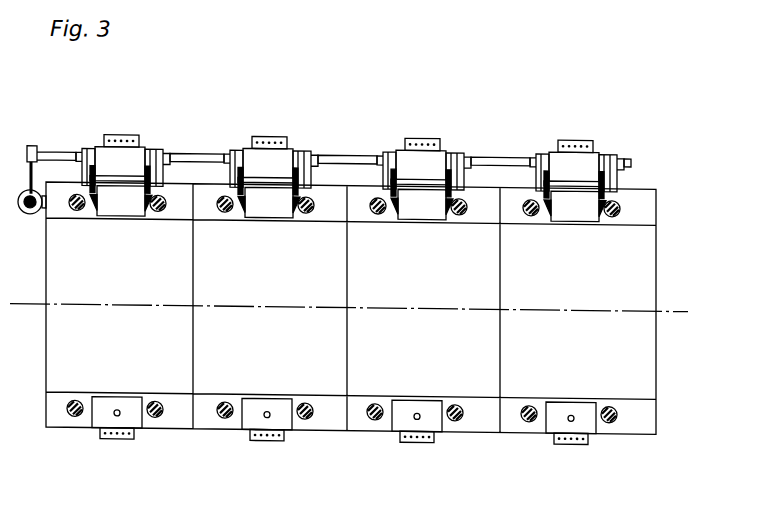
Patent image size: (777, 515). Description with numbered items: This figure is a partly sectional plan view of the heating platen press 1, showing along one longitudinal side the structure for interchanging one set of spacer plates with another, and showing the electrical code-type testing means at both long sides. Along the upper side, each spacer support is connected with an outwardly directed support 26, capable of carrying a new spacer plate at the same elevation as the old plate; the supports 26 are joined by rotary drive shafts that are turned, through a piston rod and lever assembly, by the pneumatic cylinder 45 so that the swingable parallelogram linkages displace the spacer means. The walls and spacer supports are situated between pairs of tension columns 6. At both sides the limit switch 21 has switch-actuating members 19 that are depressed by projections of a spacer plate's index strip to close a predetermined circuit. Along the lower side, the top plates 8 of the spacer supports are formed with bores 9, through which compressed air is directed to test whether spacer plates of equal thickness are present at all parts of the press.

The base plate 1 is at (638, 351).
The tension columns 6 is at (225, 468).
The top plates 8 is at (528, 469).
The bores 9 is at (459, 463).
The switch-actuating members 19 is at (125, 468).
The limit switch 21 is at (416, 466).
The supports 26 is at (585, 161).
The pneumatic cylinder 45 is at (27, 214).